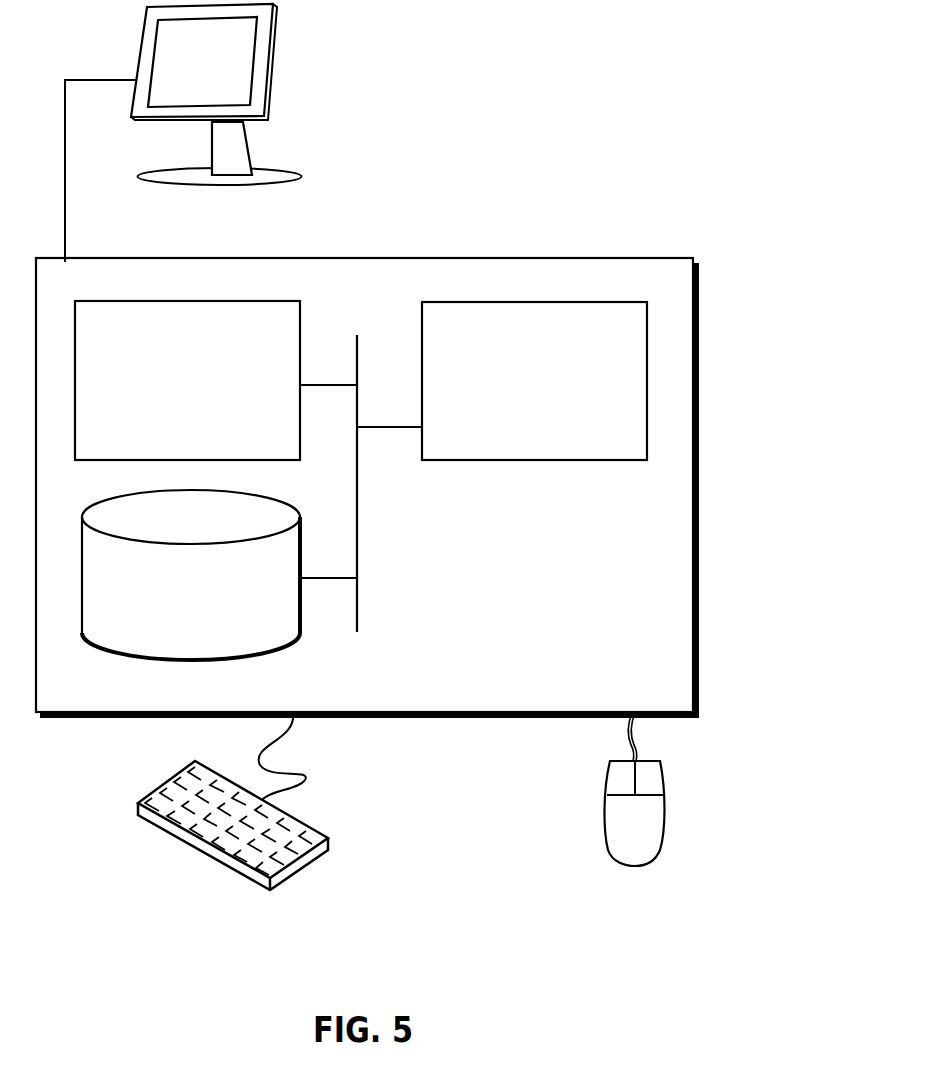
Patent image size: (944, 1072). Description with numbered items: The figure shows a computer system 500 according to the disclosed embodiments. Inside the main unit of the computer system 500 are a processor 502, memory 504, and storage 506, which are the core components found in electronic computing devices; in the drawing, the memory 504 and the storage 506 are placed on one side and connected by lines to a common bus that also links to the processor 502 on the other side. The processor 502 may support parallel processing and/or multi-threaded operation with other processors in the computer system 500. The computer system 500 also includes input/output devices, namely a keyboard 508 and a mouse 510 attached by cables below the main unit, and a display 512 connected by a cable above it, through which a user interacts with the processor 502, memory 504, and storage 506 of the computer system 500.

The computer system 500 is at (412, 238).
The processor 502 is at (517, 392).
The memory 504 is at (168, 392).
The storage 506 is at (174, 604).
The keyboard 508 is at (157, 823).
The mouse 510 is at (615, 836).
The display 512 is at (183, 133).